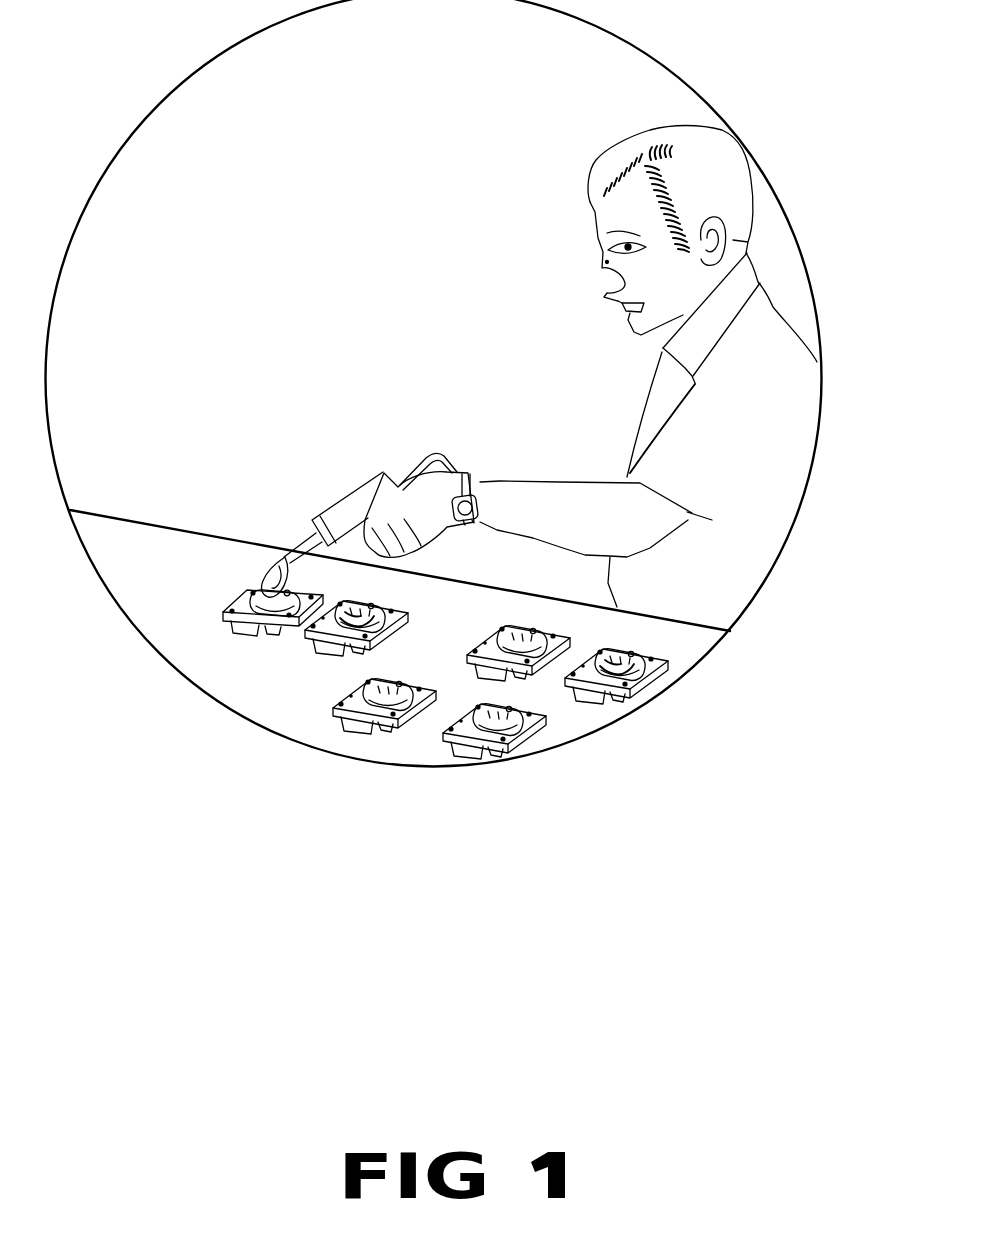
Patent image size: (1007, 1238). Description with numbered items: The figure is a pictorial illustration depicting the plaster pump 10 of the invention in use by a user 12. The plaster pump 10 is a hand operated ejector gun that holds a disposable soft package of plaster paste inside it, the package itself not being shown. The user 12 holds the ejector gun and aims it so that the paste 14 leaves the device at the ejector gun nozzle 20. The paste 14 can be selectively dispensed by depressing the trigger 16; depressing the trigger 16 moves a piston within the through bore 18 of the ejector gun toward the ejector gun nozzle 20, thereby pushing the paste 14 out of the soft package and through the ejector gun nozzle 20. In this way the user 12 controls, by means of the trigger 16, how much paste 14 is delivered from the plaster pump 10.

The plaster pump 10 is at (357, 450).
The user 12 is at (770, 320).
The paste 14 is at (273, 570).
The trigger 16 is at (301, 565).
The through bore 18 is at (347, 509).
The ejector gun nozzle 20 is at (300, 540).